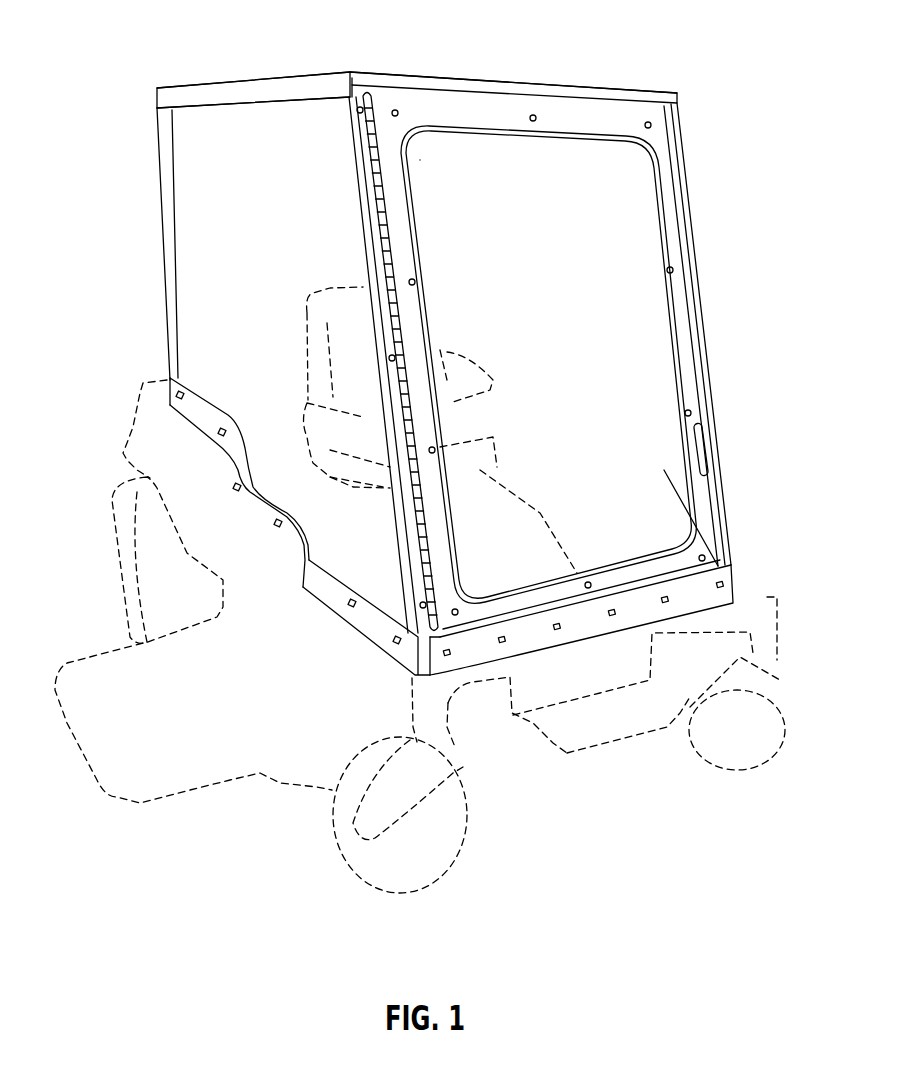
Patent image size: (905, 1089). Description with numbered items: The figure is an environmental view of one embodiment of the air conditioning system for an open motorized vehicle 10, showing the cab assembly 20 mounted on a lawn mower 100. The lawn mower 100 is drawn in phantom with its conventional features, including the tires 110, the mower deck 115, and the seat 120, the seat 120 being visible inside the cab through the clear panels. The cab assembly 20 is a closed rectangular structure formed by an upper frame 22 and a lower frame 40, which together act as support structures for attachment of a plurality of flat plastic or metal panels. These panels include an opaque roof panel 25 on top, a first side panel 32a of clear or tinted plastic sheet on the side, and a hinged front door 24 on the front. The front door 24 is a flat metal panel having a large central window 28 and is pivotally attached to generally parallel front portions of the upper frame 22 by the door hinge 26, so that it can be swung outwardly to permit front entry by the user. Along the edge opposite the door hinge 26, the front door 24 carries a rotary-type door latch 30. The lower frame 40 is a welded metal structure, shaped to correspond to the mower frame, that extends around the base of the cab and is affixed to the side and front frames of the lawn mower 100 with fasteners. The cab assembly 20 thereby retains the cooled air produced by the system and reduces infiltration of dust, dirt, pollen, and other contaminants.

The air conditioning system for an open motorized vehicle 10 is at (703, 71).
The cab assembly 20 is at (697, 250).
The upper frame 22 is at (165, 130).
The front door 24 is at (707, 512).
The roof panel 25 is at (363, 79).
The door hinge 26 is at (402, 178).
The window 28 is at (633, 350).
The door latch 30 is at (702, 452).
The first side panel 32a is at (193, 191).
The lower frame 40 is at (227, 467).
The lawn mower 100 is at (507, 769).
The tires 110 is at (110, 552).
The mower deck 115 is at (261, 774).
The seat 120 is at (323, 318).